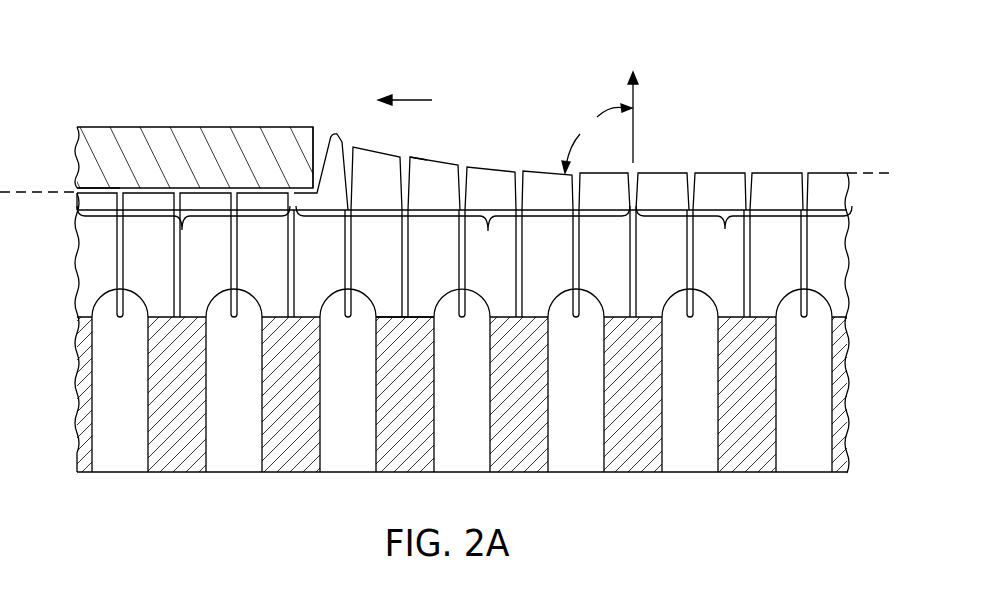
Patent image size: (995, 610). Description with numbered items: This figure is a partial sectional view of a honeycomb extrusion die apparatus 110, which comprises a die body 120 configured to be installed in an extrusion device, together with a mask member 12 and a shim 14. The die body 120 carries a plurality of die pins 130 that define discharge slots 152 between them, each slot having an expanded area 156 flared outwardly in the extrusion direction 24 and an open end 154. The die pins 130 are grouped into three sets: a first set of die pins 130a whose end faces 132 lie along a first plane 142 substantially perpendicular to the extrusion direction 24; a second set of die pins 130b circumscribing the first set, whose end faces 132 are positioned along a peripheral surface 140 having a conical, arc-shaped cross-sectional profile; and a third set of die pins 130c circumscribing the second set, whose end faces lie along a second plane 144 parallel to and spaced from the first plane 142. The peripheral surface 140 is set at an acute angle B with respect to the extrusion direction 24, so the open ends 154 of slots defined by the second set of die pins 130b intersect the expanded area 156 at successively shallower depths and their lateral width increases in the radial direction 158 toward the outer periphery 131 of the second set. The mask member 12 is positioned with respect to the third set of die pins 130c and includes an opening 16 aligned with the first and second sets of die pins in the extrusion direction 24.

The mask member 12 is at (105, 125).
The shim 14 is at (88, 191).
The opening 16 is at (315, 136).
The extrusion direction 24 is at (638, 127).
The acute angle B is at (597, 138).
The honeycomb extrusion die apparatus 110 is at (743, 98).
The die body 120 is at (738, 483).
The die pins 130 is at (825, 168).
The first set of die pins 130a is at (754, 171).
The second set of die pins 130b is at (462, 187).
The third set of die pins 130c is at (183, 228).
The outer periphery 131 is at (338, 134).
The end face 132 is at (773, 173).
The peripheral surface 140 is at (427, 157).
The first plane 142 is at (865, 168).
The second plane 144 is at (43, 193).
The discharge slots 152 is at (410, 290).
The open end 154 is at (406, 163).
The expanded area 156 is at (413, 187).
The radial direction 158 is at (415, 97).